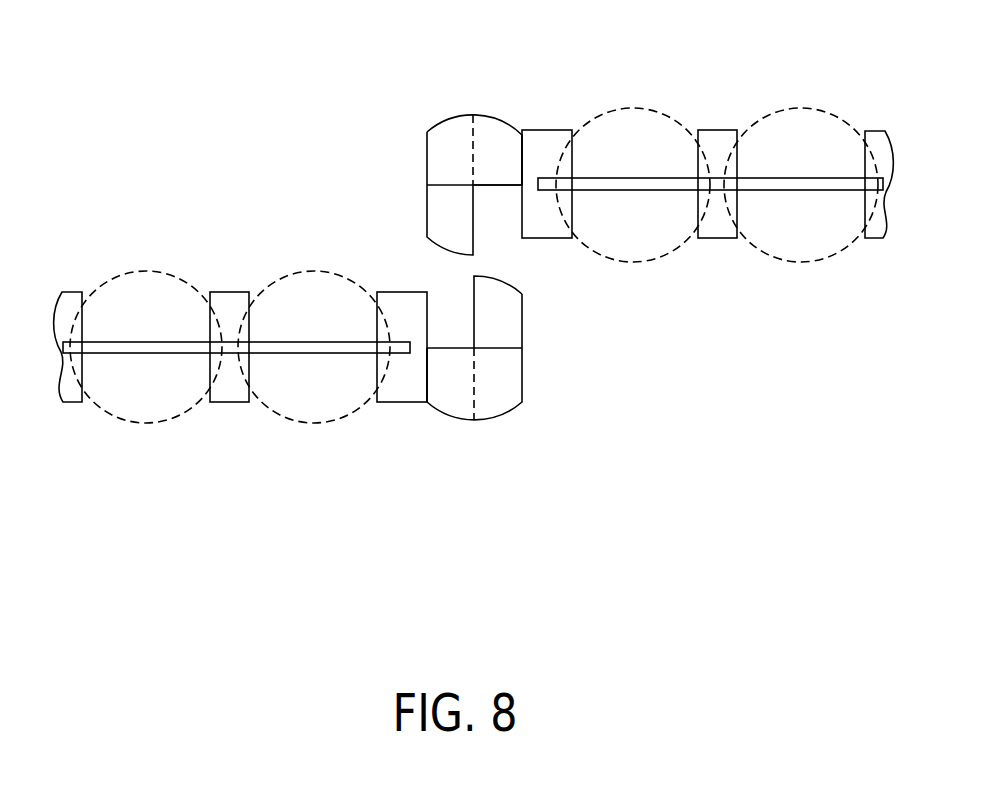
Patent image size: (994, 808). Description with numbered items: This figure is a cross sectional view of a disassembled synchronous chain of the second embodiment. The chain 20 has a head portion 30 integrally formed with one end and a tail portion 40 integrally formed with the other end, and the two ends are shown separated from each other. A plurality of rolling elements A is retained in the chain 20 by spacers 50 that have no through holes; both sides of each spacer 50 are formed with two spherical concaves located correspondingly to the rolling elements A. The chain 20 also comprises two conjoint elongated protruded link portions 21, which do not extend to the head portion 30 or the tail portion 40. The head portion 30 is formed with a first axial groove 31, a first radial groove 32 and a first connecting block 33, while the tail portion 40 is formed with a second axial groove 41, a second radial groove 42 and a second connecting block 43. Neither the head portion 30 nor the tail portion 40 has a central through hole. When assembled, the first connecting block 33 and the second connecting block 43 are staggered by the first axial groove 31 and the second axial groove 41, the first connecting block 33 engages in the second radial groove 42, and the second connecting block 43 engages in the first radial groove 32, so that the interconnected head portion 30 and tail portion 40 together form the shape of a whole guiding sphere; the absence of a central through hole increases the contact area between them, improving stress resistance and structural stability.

The chain 20 is at (715, 142).
The elongated protruded link portion 21 is at (694, 183).
The head portion 30 is at (475, 143).
The first axial groove 31 is at (465, 196).
The first radial groove 32 is at (493, 202).
The first connecting block 33 is at (438, 220).
The tail portion 40 is at (479, 424).
The second axial groove 41 is at (498, 347).
The second radial groove 42 is at (462, 320).
The second connecting block 43 is at (500, 320).
The spacer 50 is at (230, 390).
The rolling element A is at (307, 387).